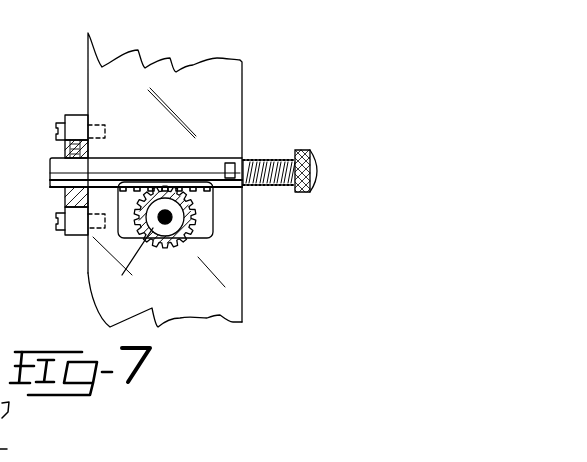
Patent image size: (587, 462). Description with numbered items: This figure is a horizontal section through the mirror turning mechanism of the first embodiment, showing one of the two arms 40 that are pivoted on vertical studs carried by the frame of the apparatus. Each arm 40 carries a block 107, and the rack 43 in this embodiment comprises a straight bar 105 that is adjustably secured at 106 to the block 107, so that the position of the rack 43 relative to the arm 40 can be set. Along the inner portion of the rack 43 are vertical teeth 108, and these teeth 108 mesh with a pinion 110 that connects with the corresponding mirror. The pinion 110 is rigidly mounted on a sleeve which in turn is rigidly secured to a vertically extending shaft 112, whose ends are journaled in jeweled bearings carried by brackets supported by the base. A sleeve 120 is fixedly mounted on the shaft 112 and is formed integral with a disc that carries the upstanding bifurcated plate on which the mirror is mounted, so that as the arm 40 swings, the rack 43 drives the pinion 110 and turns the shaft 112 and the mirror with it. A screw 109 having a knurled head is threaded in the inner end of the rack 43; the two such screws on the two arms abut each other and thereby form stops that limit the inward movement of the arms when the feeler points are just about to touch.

The arm 40 is at (195, 70).
The rack 43 is at (215, 160).
The straight bar 105 is at (158, 158).
The adjustable securing means 106 is at (67, 146).
The block 107 is at (73, 116).
The vertical teeth 108 is at (235, 213).
The screw 109 is at (305, 140).
The pinion 110 is at (178, 242).
The vertically extending shaft 112 is at (162, 230).
The sleeve 120 is at (127, 267).